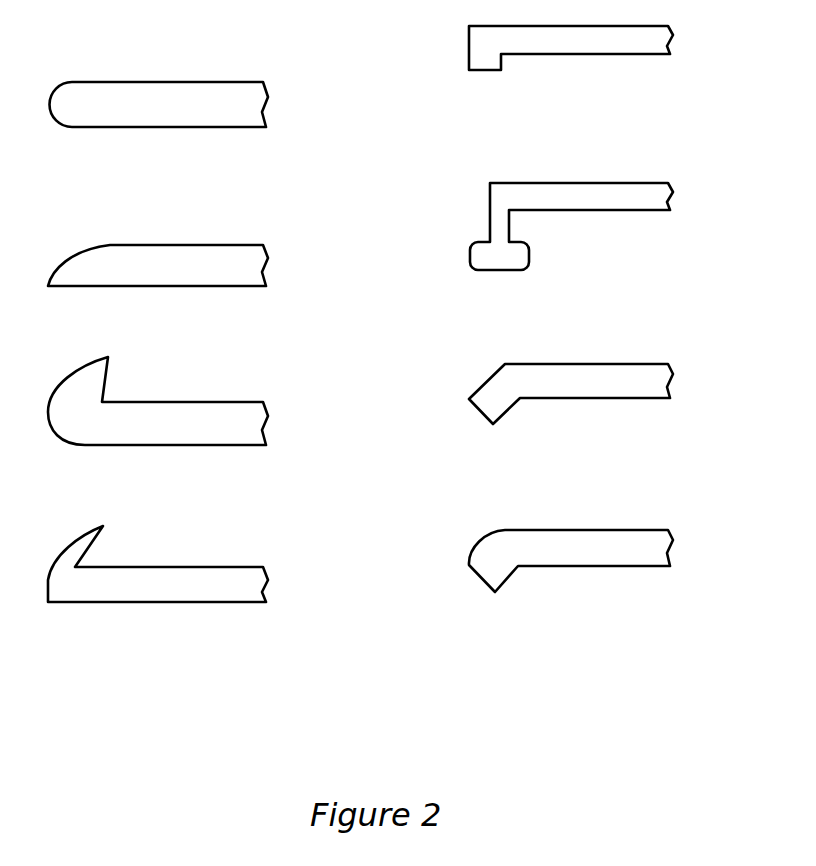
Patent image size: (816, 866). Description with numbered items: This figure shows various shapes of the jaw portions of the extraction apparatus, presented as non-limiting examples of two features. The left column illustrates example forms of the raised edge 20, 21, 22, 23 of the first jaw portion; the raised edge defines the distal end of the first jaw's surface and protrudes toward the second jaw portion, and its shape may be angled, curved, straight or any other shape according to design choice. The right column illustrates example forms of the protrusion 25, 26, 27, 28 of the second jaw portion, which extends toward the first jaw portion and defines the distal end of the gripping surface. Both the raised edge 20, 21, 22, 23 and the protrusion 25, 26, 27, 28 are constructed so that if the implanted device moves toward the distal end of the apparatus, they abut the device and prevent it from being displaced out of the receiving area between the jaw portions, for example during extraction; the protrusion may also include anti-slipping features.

The raised edge 20 is at (140, 127).
The raised edge 21 is at (187, 286).
The raised edge 22 is at (183, 445).
The raised edge 23 is at (165, 602).
The protrusion 25 is at (589, 54).
The protrusion 26 is at (594, 210).
The protrusion 27 is at (597, 398).
The protrusion 28 is at (585, 566).